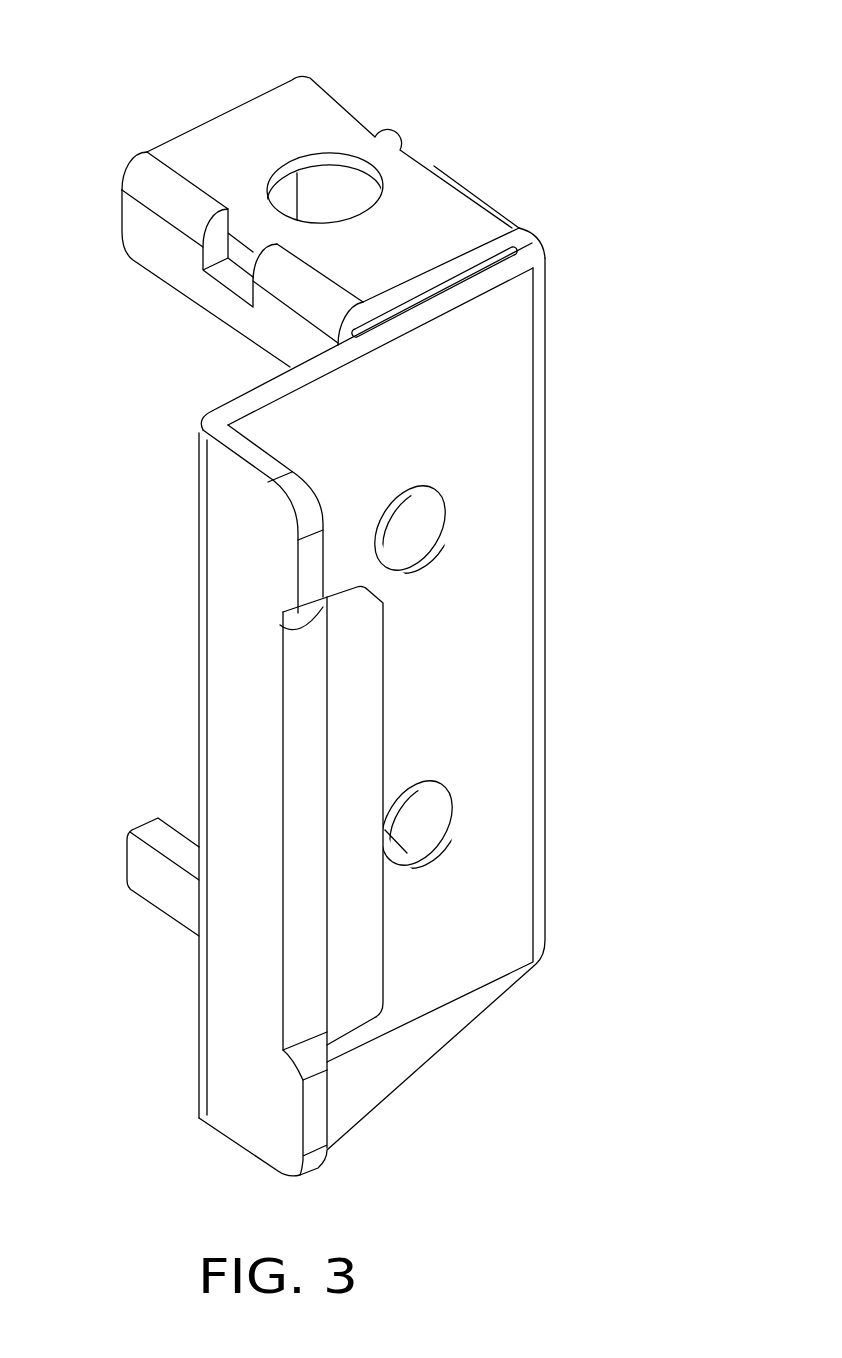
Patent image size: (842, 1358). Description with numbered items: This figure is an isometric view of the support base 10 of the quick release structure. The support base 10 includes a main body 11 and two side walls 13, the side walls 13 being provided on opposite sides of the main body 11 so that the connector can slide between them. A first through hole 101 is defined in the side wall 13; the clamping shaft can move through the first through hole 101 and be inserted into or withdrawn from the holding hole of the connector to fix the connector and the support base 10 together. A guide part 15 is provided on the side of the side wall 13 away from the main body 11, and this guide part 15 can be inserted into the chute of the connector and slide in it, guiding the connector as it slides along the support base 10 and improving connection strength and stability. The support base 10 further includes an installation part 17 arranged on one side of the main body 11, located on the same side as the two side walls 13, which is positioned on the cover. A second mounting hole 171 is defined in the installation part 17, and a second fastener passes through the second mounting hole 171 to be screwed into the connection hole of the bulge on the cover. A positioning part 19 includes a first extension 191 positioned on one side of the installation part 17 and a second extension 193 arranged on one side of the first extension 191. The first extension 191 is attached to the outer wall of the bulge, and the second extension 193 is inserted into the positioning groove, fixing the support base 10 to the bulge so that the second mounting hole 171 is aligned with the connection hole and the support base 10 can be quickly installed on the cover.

The support base 10 is at (380, 43).
The main body 11 is at (347, 195).
The first through hole 101 is at (274, 176).
The side wall 13 is at (193, 155).
The guide part 15 is at (148, 247).
The installation part 17 is at (500, 690).
The second mounting hole 171 is at (421, 519).
The positioning part 19 is at (108, 660).
The first extension 191 is at (243, 607).
The second extension 193 is at (352, 755).